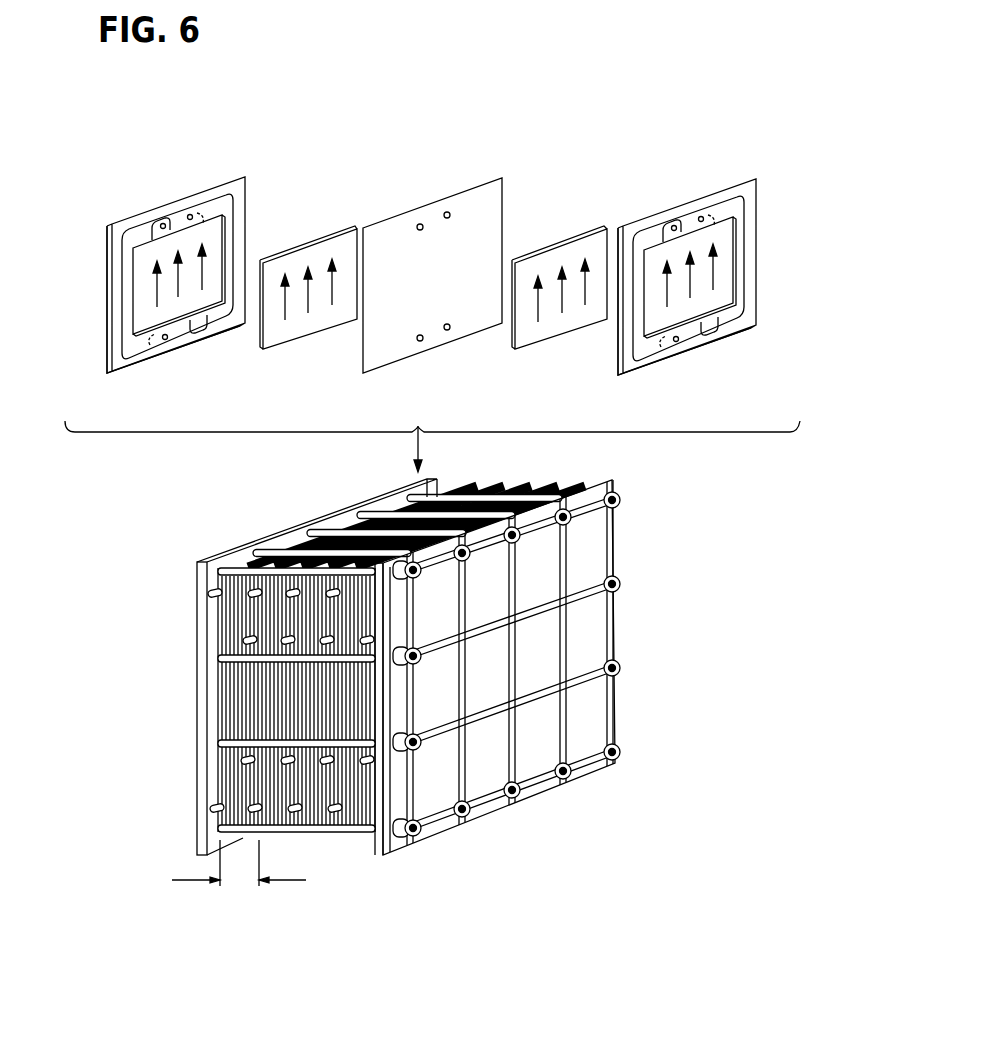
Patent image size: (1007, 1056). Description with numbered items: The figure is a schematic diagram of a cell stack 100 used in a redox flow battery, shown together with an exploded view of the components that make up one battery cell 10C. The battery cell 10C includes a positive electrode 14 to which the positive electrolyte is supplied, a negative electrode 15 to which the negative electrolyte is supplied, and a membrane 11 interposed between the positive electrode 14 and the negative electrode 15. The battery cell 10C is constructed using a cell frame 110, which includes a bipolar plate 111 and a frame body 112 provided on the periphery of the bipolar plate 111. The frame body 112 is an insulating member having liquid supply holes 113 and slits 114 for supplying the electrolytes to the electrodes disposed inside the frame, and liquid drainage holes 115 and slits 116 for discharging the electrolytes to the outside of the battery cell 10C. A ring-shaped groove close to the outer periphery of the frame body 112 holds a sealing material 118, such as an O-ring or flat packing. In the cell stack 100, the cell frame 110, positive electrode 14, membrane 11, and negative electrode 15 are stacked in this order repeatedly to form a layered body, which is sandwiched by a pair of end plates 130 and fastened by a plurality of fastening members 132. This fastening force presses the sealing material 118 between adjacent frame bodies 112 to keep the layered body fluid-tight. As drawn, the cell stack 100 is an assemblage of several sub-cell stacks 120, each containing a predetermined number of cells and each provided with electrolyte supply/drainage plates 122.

The battery cell 10C is at (326, 186).
The membrane 11 is at (432, 215).
The positive electrode 14 is at (294, 330).
The negative electrode 15 is at (545, 330).
The cell stack 100 is at (632, 621).
The cell frame 110 is at (88, 270).
The bipolar plate 111 is at (723, 233).
The frame body 112 is at (742, 250).
The liquid supply holes 113 is at (186, 330).
The slits 114 is at (145, 343).
The liquid drainage holes 115 is at (192, 217).
The slits 116 is at (153, 227).
The sealing material 118 is at (120, 318).
The sub-cell stack 120 is at (239, 885).
The electrolyte supply/drainage plates 122 is at (223, 715).
The end plates 130 is at (200, 587).
The fastening members 132 is at (338, 535).